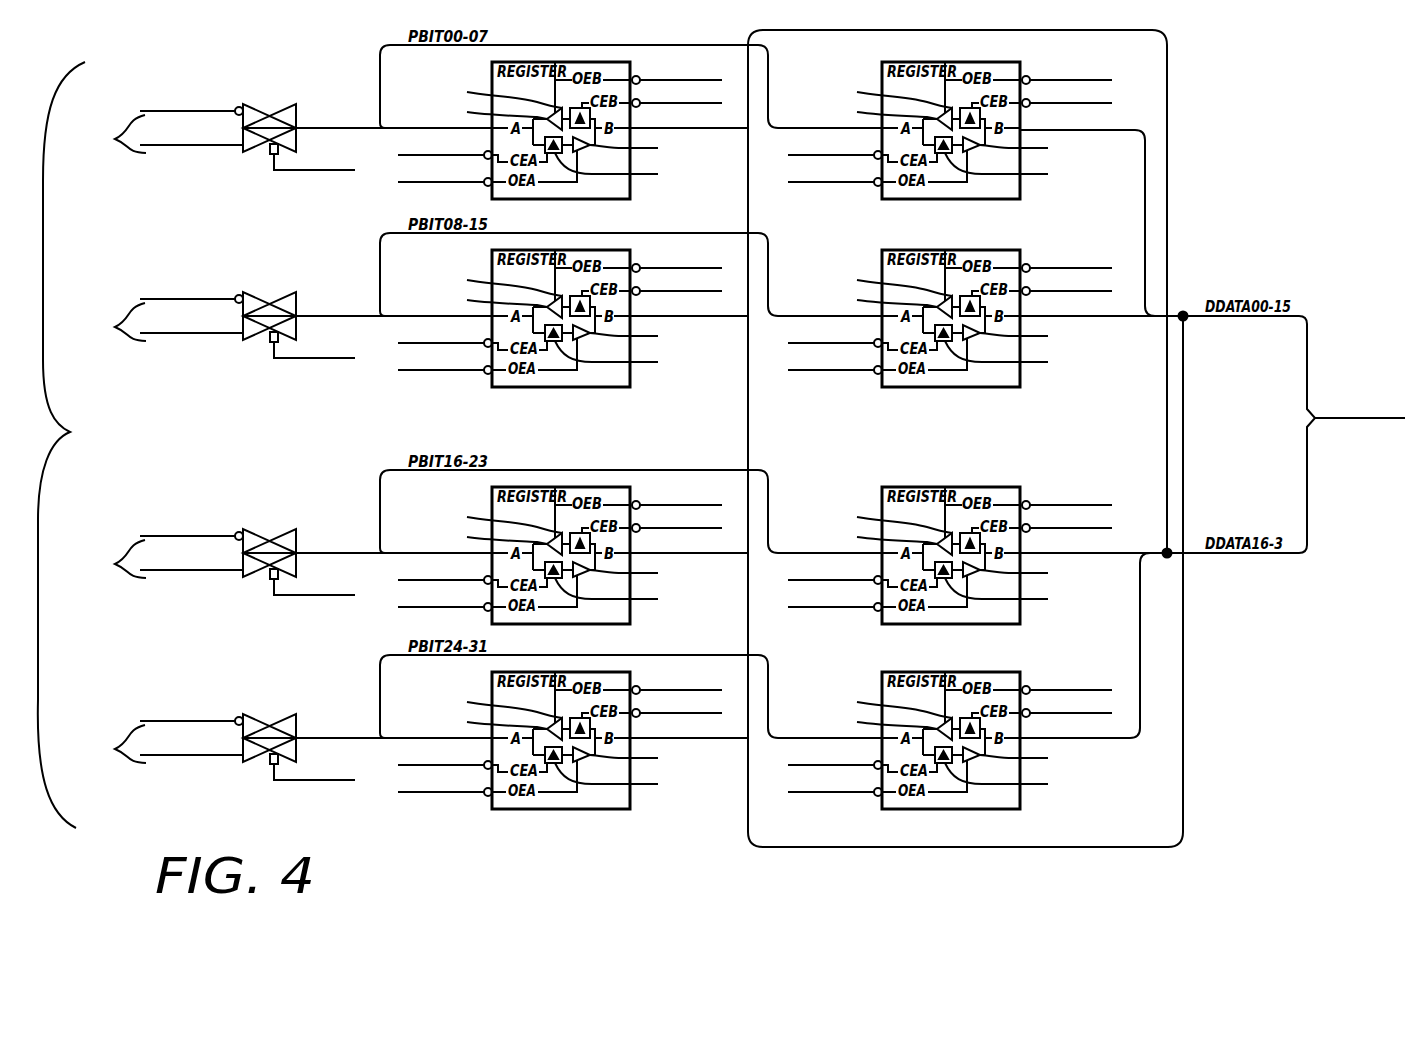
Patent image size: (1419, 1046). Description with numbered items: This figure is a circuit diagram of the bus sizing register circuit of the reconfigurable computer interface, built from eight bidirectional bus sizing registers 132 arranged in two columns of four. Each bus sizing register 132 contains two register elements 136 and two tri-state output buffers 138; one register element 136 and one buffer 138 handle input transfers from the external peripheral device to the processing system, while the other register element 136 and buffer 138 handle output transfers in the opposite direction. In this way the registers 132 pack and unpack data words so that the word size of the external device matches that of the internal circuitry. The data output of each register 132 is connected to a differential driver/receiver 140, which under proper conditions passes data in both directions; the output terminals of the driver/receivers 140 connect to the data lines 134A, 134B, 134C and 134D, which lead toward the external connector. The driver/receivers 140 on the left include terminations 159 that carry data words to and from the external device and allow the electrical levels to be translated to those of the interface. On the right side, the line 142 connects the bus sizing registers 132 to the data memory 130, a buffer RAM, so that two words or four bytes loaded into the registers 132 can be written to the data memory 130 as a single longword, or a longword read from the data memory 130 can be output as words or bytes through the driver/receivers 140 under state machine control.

The data memory 130 is at (1372, 471).
The bus sizing register 132 is at (755, 430).
The data line 134A is at (149, 123).
The data line 134B is at (149, 311).
The data line 134C is at (149, 548).
The data line 134D is at (149, 733).
The register element 136 is at (760, 437).
The tri-state output buffer 138 is at (760, 433).
The differential driver/receiver 140 is at (316, 420).
The data memory line 142 is at (1330, 425).
The terminations 159 is at (57, 445).